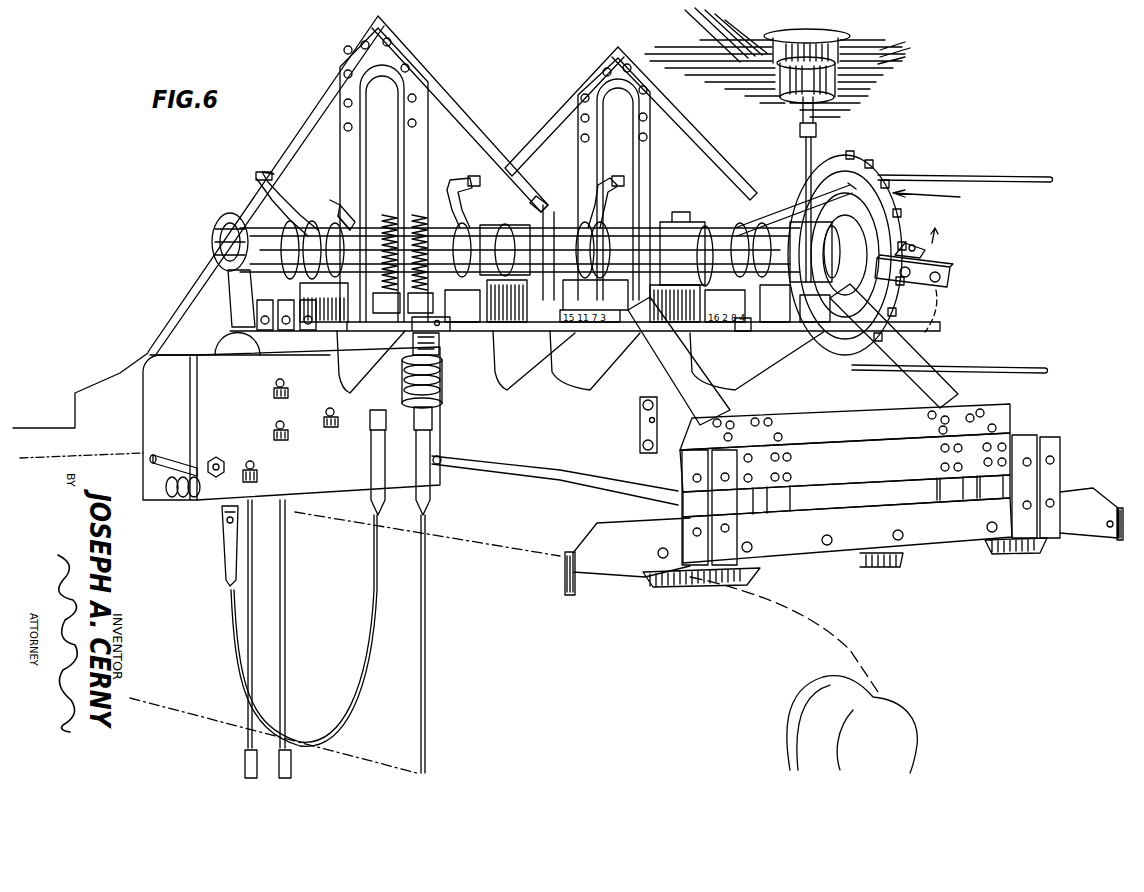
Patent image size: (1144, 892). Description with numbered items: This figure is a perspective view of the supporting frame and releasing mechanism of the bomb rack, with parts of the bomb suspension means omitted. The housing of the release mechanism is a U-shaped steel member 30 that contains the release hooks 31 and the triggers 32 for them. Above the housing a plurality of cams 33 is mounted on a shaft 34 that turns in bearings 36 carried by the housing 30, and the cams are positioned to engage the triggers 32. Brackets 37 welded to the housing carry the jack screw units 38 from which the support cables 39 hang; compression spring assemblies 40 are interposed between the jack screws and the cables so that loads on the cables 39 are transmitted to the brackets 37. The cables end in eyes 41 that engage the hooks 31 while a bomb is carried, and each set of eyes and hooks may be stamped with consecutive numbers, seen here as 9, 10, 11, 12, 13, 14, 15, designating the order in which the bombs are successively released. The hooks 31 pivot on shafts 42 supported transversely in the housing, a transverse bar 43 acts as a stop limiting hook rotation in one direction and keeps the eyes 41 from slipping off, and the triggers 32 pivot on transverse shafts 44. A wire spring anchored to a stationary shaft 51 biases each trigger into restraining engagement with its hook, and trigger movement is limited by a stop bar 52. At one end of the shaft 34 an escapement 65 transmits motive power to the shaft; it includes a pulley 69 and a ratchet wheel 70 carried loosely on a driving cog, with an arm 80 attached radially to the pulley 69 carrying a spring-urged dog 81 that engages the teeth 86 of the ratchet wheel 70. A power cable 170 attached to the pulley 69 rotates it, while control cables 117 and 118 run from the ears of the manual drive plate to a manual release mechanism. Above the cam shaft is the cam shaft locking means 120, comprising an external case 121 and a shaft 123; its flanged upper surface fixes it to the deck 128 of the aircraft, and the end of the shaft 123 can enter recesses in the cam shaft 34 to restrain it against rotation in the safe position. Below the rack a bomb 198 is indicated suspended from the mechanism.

The cam shaft locking means 120 is at (823, 32).
The deck 128 is at (890, 60).
The external case 121 is at (787, 83).
The shaft 123 is at (813, 152).
The power cable 170 is at (783, 195).
The ratchet wheel 70 is at (867, 177).
The control cable 117 is at (967, 178).
The escapement 65 is at (938, 198).
The pulley 69 is at (857, 223).
The dog 81 is at (928, 247).
The arm 80 is at (947, 287).
The teeth 86 is at (890, 322).
The control cable 118 is at (947, 365).
The shaft 34 is at (220, 248).
The cams 33 is at (343, 208).
The bearings 36 is at (360, 227).
The jack screw units 38 is at (417, 293).
The triggers 32 is at (273, 335).
The brackets 37 is at (363, 369).
The U-shaped steel member 30 is at (237, 395).
The stationary transversely disposed shaft 51 is at (274, 393).
The stop bar 52 is at (274, 438).
The transversely disposed shafts 44 is at (335, 428).
The compression spring assemblies 40 is at (446, 387).
The shafts 42 is at (258, 477).
The transverse bar 43 is at (153, 466).
The release hooks 31 is at (178, 492).
The eyes 41 is at (222, 515).
The support cables 39 is at (368, 670).
The bomb 198 is at (840, 633).
The cam lever 9 is at (268, 183).
The cam lever 10 is at (463, 202).
The cam lever 11 is at (606, 202).
The bearing block 12 is at (710, 249).
The cam 13 is at (340, 217).
The collar 14 is at (505, 250).
The collar 15 is at (592, 250).